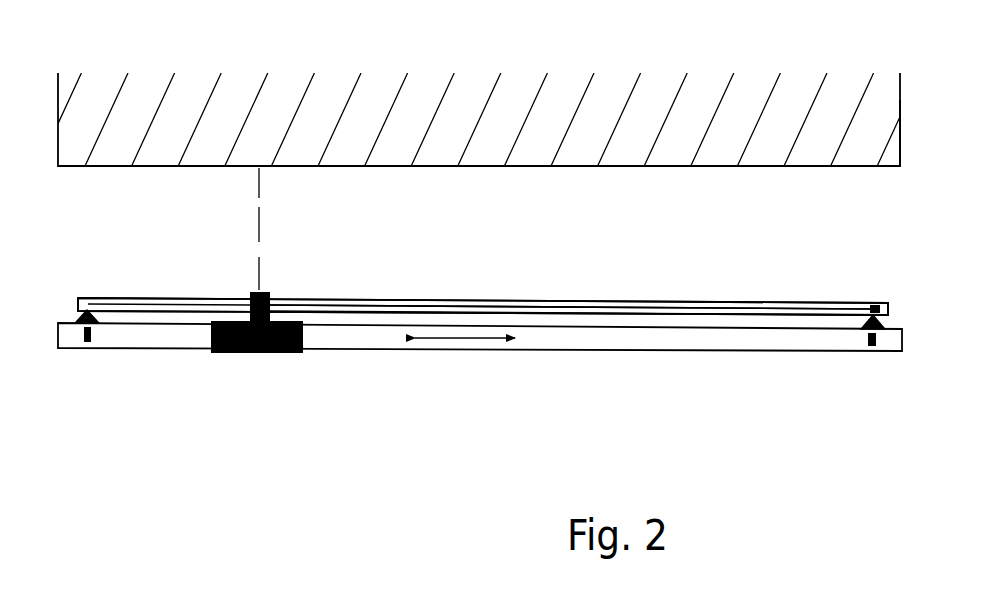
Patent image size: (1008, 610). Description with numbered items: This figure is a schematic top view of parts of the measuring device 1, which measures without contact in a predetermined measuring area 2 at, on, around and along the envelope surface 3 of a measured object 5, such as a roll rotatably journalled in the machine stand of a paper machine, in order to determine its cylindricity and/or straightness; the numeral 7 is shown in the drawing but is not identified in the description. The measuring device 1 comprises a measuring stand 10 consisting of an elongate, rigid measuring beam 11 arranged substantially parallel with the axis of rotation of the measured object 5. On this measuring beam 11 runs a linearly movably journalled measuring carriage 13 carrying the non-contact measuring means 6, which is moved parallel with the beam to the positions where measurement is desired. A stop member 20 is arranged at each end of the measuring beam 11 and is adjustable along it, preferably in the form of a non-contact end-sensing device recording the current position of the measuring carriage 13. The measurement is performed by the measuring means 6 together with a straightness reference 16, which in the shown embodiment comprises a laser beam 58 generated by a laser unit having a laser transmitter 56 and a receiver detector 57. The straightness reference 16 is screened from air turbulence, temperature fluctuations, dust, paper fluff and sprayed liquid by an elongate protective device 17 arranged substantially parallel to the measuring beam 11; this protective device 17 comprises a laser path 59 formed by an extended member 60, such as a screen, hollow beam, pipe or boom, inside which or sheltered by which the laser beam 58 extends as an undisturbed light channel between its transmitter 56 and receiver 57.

The measuring device 1 is at (683, 382).
The measuring area 2 is at (320, 217).
The envelope surface 3 is at (573, 168).
The measured object 5 is at (672, 152).
The measuring means 6 is at (263, 290).
The workpiece edge 7 is at (900, 140).
The measuring stand 10 is at (812, 374).
The measuring beam 11 is at (569, 340).
The measuring carriage 13 is at (287, 352).
The straightness reference 16 is at (777, 305).
The protective device 17 is at (667, 303).
The stop member 20 is at (90, 352).
The laser transmitter 56 is at (878, 306).
The receiver detector 57 is at (247, 295).
The laser beam 58 is at (532, 307).
The laser path 59 is at (398, 303).
The extended member 60 is at (458, 300).